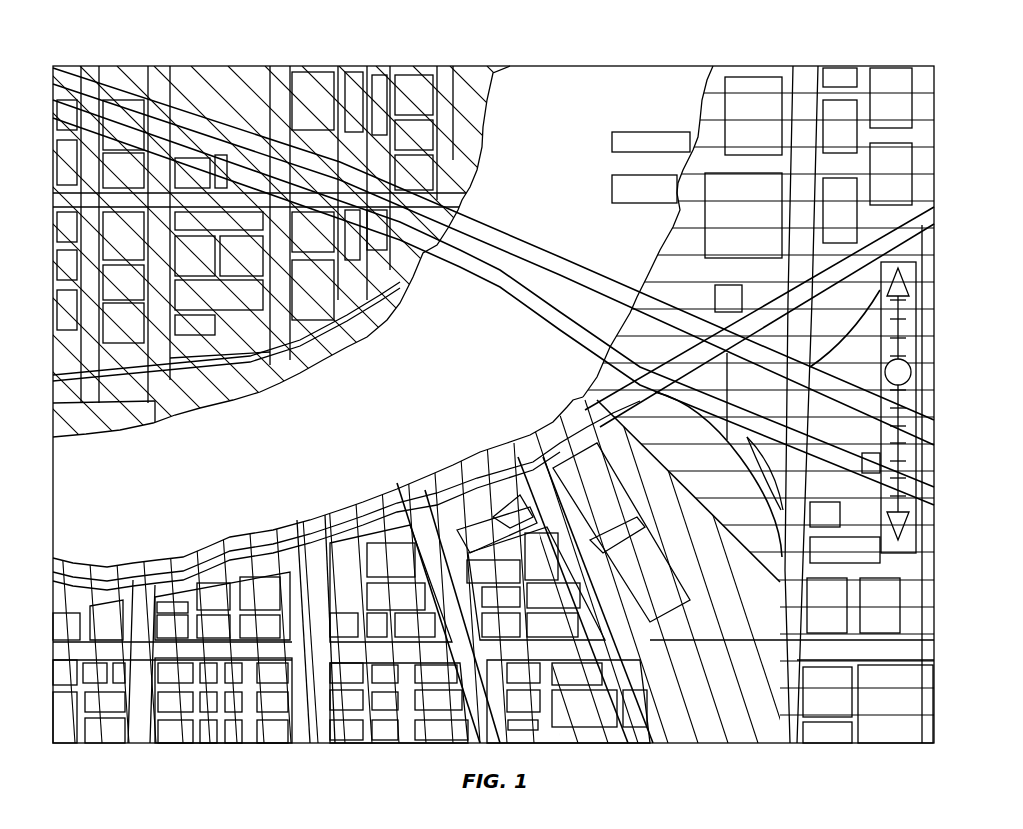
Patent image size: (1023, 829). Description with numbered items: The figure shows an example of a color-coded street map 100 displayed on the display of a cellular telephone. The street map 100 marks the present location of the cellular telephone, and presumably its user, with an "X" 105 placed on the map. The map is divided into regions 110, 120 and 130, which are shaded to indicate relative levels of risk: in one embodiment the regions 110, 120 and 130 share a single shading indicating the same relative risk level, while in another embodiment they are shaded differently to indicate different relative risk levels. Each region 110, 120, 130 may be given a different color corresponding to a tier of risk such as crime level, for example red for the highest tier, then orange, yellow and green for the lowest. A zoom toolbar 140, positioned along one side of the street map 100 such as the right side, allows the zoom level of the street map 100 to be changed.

The street map 100 is at (511, 55).
The present location X 105 is at (500, 298).
The region 110 is at (192, 415).
The region 120 is at (340, 507).
The region 130 is at (700, 112).
The zoom toolbar 140 is at (937, 408).